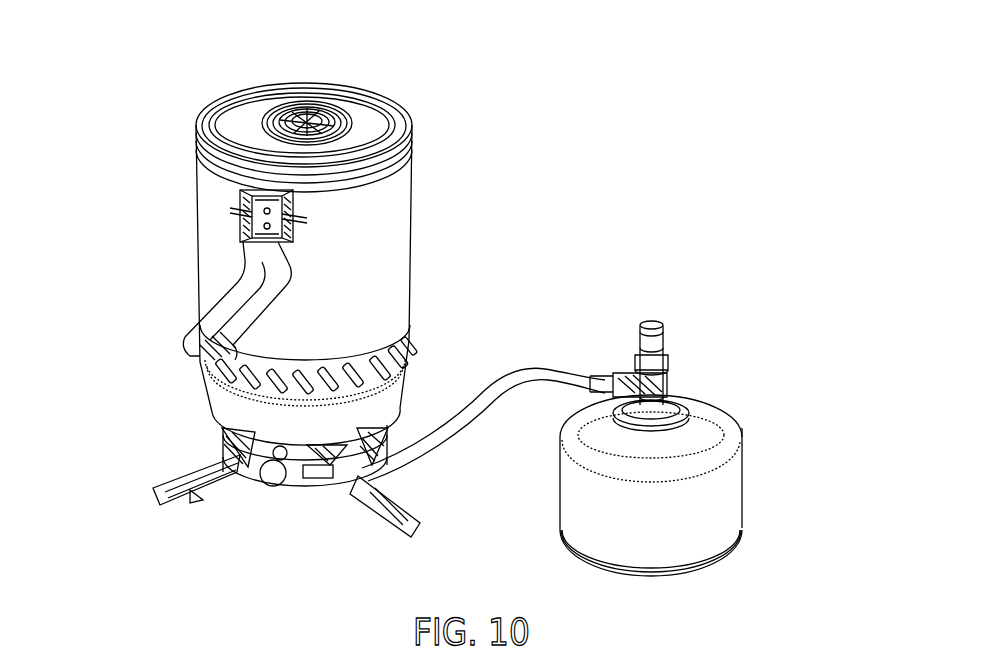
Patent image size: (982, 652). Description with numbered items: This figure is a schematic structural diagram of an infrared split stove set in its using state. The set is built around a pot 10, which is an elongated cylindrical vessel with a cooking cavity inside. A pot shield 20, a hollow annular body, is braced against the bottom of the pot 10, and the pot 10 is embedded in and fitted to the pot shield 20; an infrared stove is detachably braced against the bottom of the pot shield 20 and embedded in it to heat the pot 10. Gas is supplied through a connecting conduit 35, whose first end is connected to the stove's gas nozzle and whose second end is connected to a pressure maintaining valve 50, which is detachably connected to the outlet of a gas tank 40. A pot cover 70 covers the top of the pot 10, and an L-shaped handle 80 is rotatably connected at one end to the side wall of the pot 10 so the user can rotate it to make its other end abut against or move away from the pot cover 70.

The pot 10 is at (267, 321).
The pot shield 20 is at (210, 343).
The connecting conduit 35 is at (313, 443).
The gas tank 40 is at (687, 510).
The pressure maintaining valve 50 is at (670, 377).
The pot cover 70 is at (260, 113).
The handle 80 is at (277, 325).